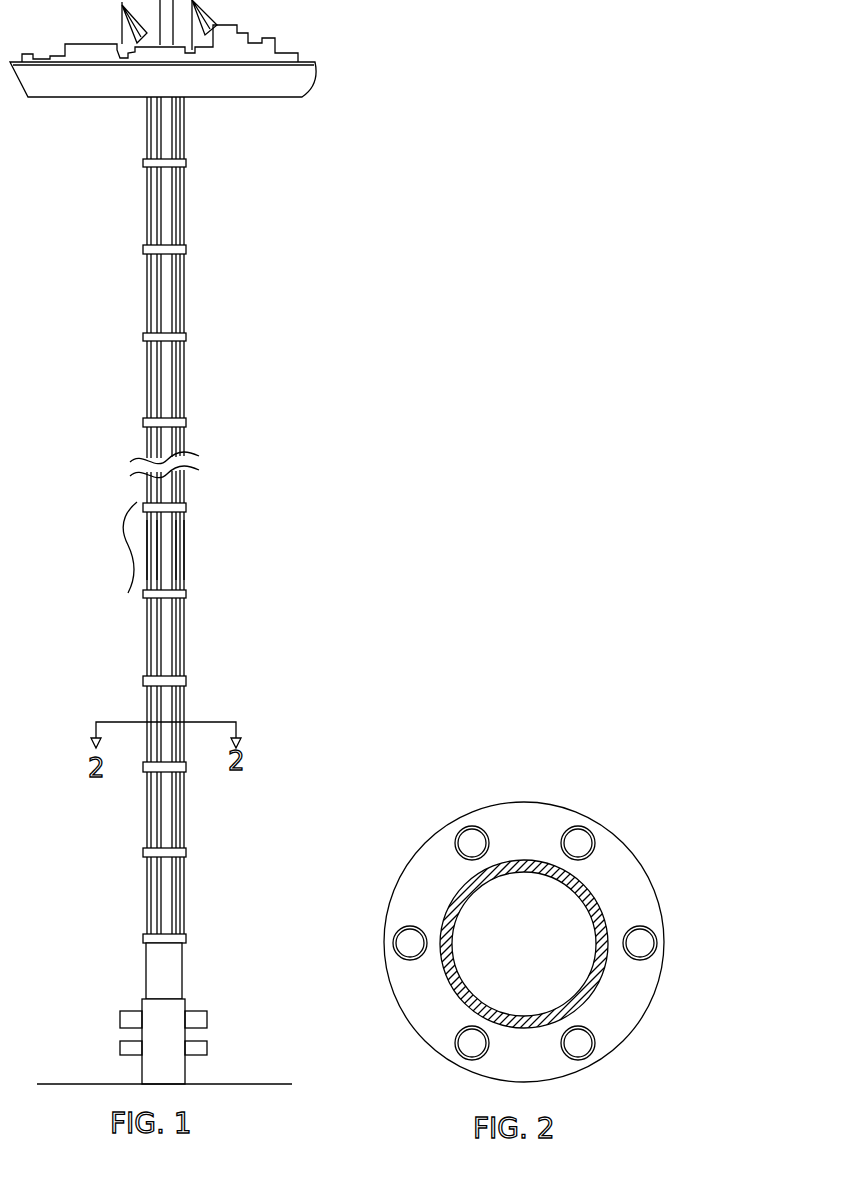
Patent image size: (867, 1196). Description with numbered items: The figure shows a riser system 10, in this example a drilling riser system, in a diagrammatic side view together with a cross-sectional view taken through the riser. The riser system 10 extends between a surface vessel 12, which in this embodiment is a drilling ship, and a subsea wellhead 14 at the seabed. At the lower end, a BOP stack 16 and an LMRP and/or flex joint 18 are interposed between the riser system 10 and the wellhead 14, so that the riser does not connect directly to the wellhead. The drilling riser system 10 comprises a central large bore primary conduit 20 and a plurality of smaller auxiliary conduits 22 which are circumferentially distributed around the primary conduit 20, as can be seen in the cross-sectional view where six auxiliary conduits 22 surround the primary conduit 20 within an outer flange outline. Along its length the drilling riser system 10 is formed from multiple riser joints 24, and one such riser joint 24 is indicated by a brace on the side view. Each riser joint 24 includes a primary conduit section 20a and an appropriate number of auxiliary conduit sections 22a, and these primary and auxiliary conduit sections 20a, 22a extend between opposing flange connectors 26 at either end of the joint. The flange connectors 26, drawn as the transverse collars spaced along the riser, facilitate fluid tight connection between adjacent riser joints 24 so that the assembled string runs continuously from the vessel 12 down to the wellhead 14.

In FIG. 2, the riser system 10 is at (682, 737).
In FIG. 1, the surface vessel 12 is at (312, 72).
In FIG. 1, the subsea wellhead 14 is at (140, 1084).
In FIG. 1, the BOP stack 16 is at (147, 1005).
In FIG. 1, the LMRP and/or flex joint 18 is at (148, 964).
In FIG. 1, the primary conduit 20 is at (165, 198).
In FIG. 2, the primary conduit 20 is at (530, 860).
In FIG. 1, the primary conduit section 20a is at (165, 538).
In FIG. 1, the auxiliary conduits 22 is at (150, 224).
In FIG. 2, the auxiliary conduits 22 is at (470, 826).
In FIG. 1, the auxiliary conduit sections 22a is at (183, 563).
In FIG. 1, the riser joint 24 is at (120, 553).
In FIG. 1, the flange connectors 26 is at (187, 504).